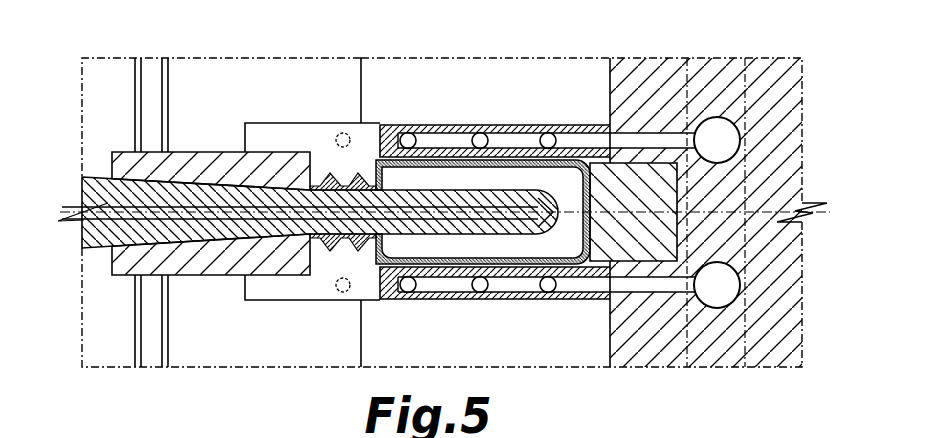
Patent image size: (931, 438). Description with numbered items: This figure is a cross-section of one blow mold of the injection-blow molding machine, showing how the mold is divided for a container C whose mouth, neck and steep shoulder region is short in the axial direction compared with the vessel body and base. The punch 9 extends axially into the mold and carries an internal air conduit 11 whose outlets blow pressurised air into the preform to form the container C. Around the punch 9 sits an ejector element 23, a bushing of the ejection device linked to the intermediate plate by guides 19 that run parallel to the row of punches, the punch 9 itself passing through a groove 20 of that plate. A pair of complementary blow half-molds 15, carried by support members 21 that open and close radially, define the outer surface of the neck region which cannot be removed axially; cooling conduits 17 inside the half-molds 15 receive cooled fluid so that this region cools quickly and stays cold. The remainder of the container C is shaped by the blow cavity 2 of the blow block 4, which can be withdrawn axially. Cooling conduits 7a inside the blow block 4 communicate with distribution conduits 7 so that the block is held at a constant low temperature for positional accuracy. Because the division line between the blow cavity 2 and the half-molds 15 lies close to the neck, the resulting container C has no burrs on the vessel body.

The blow cavity 2 is at (523, 160).
The blow block 4 is at (396, 125).
The distribution conduit 7 is at (717, 122).
The cooling conduit 7a is at (481, 133).
The punch 9 is at (502, 231).
The air conduit 11 is at (451, 215).
The complementary blow half-mold 15 is at (293, 132).
The cooling conduit 17 is at (344, 132).
The guide 19 is at (162, 318).
The groove 20 is at (86, 100).
The support member 21 is at (356, 324).
The ejector element 23 is at (218, 155).
The container C is at (460, 158).